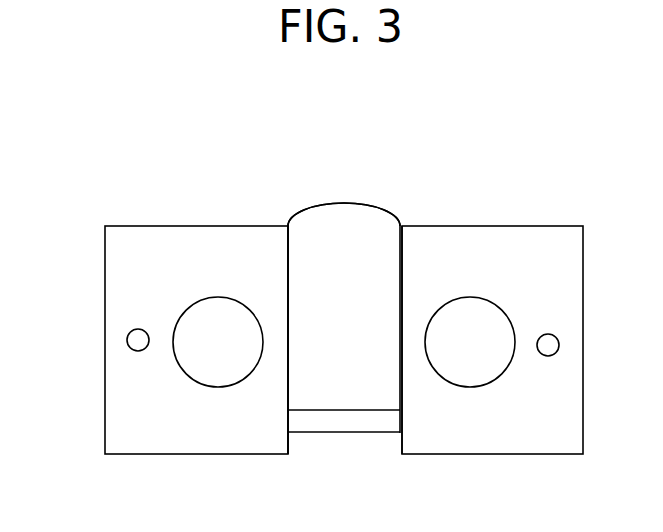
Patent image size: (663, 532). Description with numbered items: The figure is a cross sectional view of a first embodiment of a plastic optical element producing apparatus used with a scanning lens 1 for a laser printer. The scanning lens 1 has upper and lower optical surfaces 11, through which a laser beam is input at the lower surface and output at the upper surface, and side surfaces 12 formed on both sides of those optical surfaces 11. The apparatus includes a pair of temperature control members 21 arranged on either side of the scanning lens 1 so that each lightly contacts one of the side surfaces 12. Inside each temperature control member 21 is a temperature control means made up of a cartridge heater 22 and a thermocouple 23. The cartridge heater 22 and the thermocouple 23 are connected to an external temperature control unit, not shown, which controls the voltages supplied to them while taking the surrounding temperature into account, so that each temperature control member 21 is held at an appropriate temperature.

The scanning lens 1 is at (333, 228).
The optical surface 11 is at (345, 203).
The side surface 12 is at (287, 333).
The temperature control member 21 is at (197, 226).
The cartridge heater 22 is at (180, 316).
The thermocouple 23 is at (130, 350).